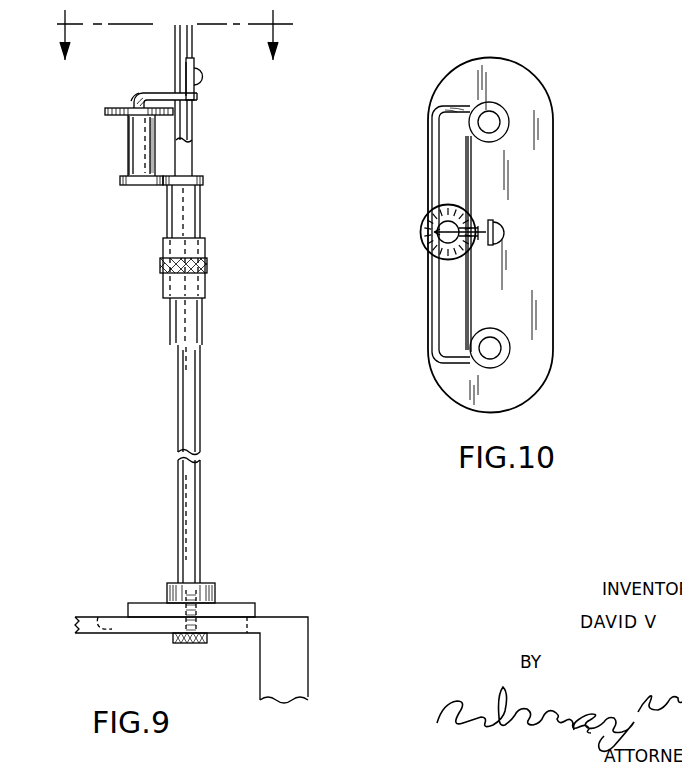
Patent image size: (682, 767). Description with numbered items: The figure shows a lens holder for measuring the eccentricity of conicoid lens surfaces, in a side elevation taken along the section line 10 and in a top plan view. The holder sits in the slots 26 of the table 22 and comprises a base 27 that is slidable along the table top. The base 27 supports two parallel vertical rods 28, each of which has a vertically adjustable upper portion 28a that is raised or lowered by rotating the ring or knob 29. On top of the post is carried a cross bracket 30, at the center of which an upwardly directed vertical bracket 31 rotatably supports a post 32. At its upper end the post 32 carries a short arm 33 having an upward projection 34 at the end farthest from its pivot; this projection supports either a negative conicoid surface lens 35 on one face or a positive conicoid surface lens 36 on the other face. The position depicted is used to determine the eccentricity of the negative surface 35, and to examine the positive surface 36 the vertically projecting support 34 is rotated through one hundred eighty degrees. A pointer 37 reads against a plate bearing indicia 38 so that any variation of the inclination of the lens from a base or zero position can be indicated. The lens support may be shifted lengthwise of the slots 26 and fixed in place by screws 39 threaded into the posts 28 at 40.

In FIG. 9, the section line 10 is at (171, 51).
In FIG. 9, the table 22 is at (138, 633).
In FIG. 9, the slots 26 is at (108, 612).
In FIG. 9, the base 27 is at (240, 610).
In FIG. 10, the base 27 is at (528, 90).
In FIG. 9, the vertical rods 28 is at (190, 428).
In FIG. 9, the upper portion 28a is at (205, 214).
In FIG. 10, the upper portion 28a is at (489, 124).
In FIG. 9, the ring or knob 29 is at (210, 262).
In FIG. 9, the cross bracket 30 is at (150, 185).
In FIG. 10, the cross bracket 30 is at (436, 158).
In FIG. 9, the vertical bracket 31 is at (118, 158).
In FIG. 9, the post 32 is at (124, 143).
In FIG. 9, the short arm 33 is at (141, 94).
In FIG. 10, the short arm 33 is at (476, 218).
In FIG. 9, the upward projection 34 is at (193, 62).
In FIG. 10, the upward projection 34 is at (493, 222).
In FIG. 9, the negative conicoid surface lens 35 is at (182, 74).
In FIG. 10, the negative conicoid surface lens 35 is at (466, 238).
In FIG. 9, the positive conicoid surface lens 36 is at (232, 74).
In FIG. 10, the positive conicoid surface lens 36 is at (500, 240).
In FIG. 9, the pointer 37 is at (131, 98).
In FIG. 10, the pointer 37 is at (430, 250).
In FIG. 9, the plate bearing indicia 38 is at (107, 115).
In FIG. 10, the plate bearing indicia 38 is at (426, 230).
In FIG. 9, the screws 39 is at (194, 644).
In FIG. 9, the threaded location 40 is at (196, 590).